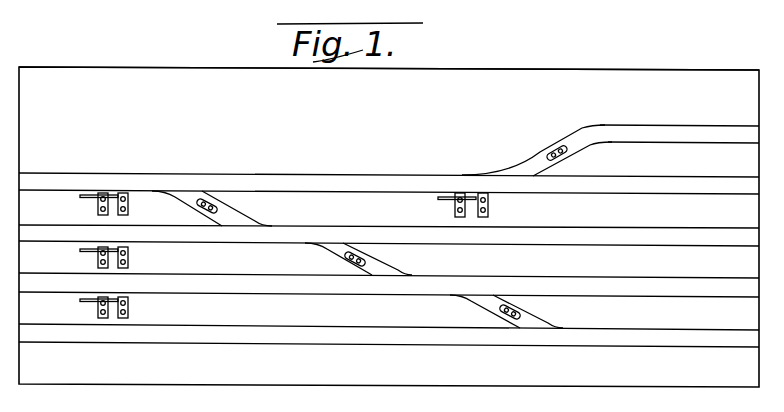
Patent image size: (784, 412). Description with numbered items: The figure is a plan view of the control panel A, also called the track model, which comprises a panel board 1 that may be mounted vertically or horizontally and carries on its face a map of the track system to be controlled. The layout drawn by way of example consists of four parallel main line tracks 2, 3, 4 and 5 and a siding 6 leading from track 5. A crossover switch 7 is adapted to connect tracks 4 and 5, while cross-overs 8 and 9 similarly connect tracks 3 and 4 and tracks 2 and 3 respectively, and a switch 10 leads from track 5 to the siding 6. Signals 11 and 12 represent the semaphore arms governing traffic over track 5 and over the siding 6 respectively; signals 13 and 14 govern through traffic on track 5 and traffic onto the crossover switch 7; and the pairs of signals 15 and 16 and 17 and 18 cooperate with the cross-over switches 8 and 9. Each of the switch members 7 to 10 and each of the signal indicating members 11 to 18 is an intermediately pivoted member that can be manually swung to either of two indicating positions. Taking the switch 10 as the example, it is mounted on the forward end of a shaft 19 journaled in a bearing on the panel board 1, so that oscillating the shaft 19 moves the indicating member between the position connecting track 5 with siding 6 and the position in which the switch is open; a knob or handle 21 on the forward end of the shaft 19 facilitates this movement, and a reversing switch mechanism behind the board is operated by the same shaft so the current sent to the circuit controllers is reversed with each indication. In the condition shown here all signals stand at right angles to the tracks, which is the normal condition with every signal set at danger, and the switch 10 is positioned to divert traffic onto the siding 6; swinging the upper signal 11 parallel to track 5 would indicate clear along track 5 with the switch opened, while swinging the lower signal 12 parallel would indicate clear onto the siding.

The panel board 1 is at (142, 78).
The control panel A is at (530, 71).
The main line track 2 is at (636, 338).
The main line track 3 is at (650, 286).
The main line track 4 is at (651, 237).
The main line track 5 is at (665, 183).
The siding 6 is at (685, 135).
The crossover switch 7 is at (235, 218).
The cross-over 8 is at (383, 268).
The cross-over 9 is at (528, 320).
The switch 10 is at (534, 161).
The shaft 19 is at (578, 153).
The knob or handle 21 is at (563, 148).
The signal 11 is at (488, 214).
The signal 12 is at (452, 209).
The signal 13 is at (128, 210).
The signal 14 is at (96, 202).
The signal 15 is at (130, 262).
The signal 16 is at (95, 256).
The signal 17 is at (130, 312).
The signal 18 is at (96, 305).